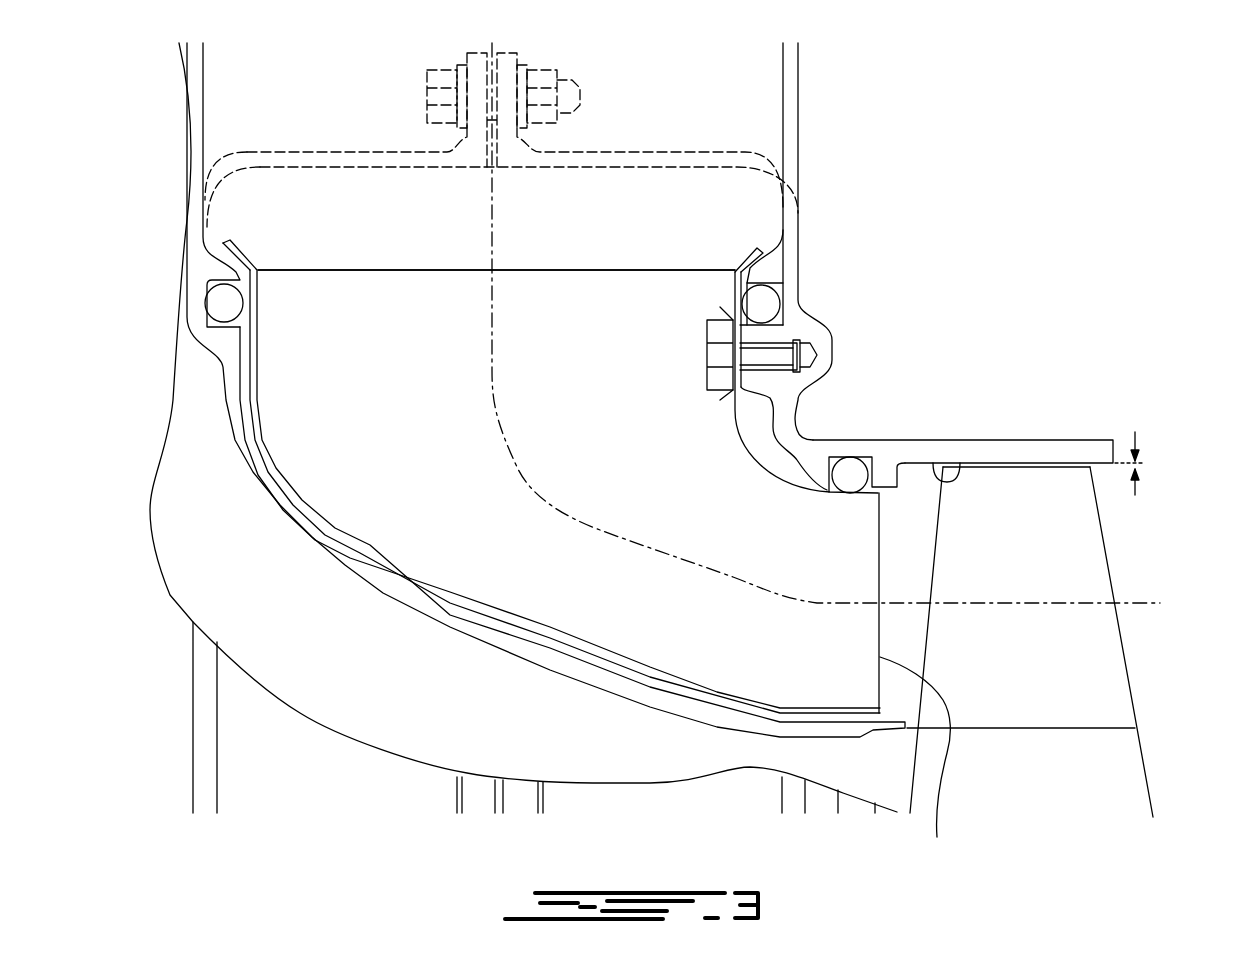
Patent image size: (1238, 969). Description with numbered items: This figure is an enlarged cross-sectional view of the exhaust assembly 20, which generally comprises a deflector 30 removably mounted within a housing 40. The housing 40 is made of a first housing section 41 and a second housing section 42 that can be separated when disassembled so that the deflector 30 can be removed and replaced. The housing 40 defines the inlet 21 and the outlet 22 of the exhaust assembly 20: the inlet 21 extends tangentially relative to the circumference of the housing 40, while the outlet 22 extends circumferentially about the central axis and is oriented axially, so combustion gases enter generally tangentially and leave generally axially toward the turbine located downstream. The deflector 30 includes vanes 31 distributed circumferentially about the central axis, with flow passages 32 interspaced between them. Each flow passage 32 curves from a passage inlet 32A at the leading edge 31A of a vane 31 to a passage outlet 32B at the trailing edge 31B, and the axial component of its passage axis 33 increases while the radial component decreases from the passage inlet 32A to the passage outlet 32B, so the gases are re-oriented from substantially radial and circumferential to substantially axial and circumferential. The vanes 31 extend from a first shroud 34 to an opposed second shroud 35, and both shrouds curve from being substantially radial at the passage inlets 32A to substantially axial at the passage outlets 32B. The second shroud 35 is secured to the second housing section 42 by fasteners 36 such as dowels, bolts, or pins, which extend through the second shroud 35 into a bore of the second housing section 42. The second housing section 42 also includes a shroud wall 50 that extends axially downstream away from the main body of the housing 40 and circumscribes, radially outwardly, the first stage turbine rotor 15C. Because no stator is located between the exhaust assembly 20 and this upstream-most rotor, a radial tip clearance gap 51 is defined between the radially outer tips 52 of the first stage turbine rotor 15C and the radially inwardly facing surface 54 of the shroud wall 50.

The exhaust assembly 20 is at (1035, 130).
The inlet 21 is at (297, 84).
The outlet 22 is at (897, 585).
The deflector 30 is at (683, 250).
The vanes 31 is at (350, 322).
The leading edges 31A is at (437, 268).
The trailing edges 31B is at (934, 763).
The flow passages 32 is at (661, 483).
The passage inlets 32A is at (496, 229).
The passage outlets 32B is at (934, 763).
The passage axes 33 is at (495, 360).
The first shroud 34 is at (363, 558).
The second shroud 35 is at (758, 460).
The fasteners 36 is at (765, 352).
The housing 40 is at (707, 152).
The first housing section 41 is at (208, 265).
The second housing section 42 is at (792, 268).
The shroud wall 50 is at (1028, 450).
The radial tip clearance gap 51 is at (1140, 465).
The radially outer tips 52 is at (1063, 473).
The radially inwardly facing surface 54 is at (958, 470).
The first stage turbine rotor 15C is at (1067, 565).